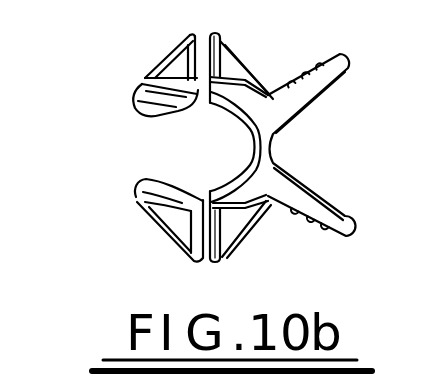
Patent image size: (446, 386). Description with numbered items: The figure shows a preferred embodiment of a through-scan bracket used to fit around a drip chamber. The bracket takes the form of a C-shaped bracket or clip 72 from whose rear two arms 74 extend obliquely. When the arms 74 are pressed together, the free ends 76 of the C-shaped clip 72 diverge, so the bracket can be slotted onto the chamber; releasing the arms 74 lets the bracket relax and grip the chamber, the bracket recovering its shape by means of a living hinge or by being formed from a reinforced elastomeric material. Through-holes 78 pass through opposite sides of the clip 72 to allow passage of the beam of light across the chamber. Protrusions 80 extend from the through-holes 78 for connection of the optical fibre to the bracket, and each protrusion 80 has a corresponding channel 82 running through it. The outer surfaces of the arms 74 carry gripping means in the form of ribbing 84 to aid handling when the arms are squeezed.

The C-shaped bracket or clip 72 is at (150, 77).
The arms 74 is at (330, 95).
The free ends 76 is at (150, 178).
The through-holes 78 is at (198, 104).
The protrusions 80 is at (238, 62).
The channel 82 is at (207, 256).
The ribbing 84 is at (322, 231).